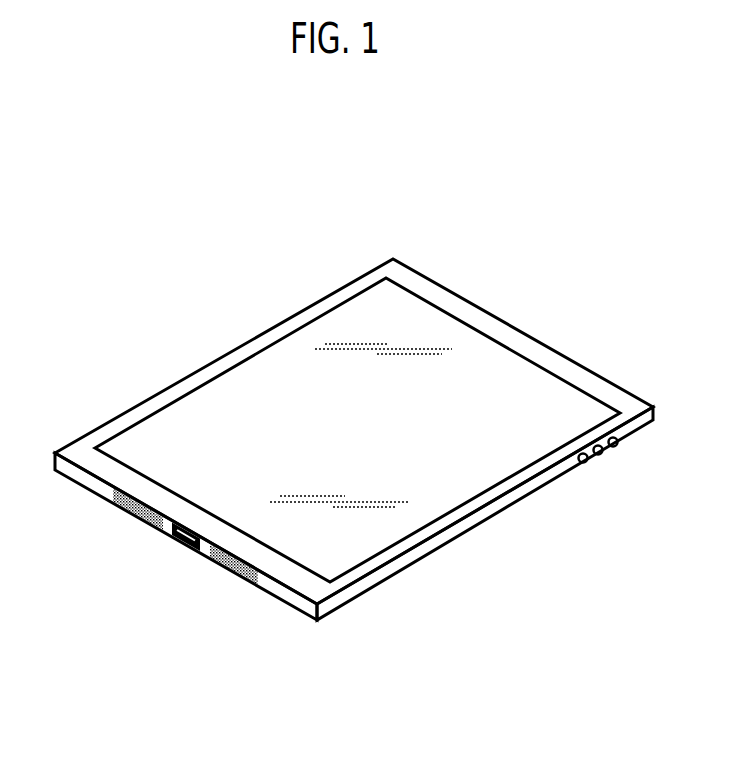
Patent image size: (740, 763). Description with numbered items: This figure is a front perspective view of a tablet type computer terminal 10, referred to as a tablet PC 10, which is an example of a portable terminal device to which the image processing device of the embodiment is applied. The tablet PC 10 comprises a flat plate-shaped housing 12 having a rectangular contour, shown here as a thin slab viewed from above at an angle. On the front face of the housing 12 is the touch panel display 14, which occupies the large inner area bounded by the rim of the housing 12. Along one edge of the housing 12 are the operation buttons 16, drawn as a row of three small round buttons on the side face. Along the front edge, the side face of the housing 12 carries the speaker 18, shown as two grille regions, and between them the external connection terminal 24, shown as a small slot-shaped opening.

The tablet type computer terminal 10 is at (187, 220).
The housing 12 is at (388, 270).
The touch panel display 14 is at (242, 377).
The operation buttons 16 is at (613, 446).
The speaker 18 is at (235, 580).
The external connection terminal 24 is at (180, 547).